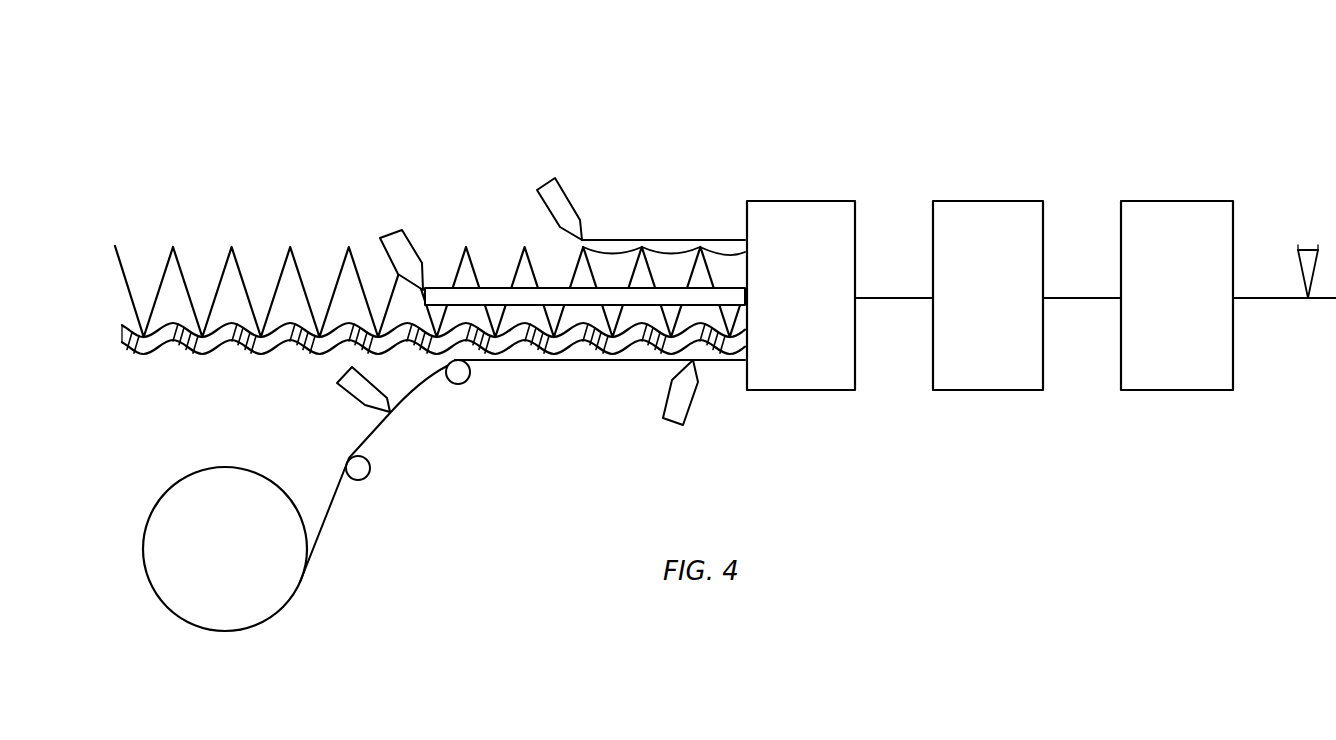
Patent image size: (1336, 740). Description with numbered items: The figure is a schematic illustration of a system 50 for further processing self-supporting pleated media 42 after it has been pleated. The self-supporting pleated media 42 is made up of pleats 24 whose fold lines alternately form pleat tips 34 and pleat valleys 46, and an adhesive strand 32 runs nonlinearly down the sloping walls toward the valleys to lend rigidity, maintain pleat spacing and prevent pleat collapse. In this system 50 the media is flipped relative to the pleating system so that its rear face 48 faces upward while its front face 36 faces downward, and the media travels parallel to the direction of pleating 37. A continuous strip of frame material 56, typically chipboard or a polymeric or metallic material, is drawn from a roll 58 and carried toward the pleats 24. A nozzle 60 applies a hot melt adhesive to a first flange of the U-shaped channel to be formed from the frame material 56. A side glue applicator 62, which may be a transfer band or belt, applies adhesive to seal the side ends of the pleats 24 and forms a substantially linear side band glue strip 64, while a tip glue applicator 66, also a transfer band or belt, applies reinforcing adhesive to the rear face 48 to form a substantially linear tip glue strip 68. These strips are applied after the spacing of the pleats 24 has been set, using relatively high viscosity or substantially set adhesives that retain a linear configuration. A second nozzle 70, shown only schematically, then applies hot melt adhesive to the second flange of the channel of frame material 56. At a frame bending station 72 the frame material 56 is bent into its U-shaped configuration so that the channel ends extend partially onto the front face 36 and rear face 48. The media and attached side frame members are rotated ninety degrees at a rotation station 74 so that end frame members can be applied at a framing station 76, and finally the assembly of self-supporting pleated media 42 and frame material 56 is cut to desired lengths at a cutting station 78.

The pleat 24 is at (271, 263).
The adhesive strand 32 is at (125, 338).
The pleat tip 34 is at (137, 333).
The front face 36 is at (178, 374).
The direction of pleating 37 is at (360, 106).
The self-supporting pleated media 42 is at (200, 148).
The pleat valley 46 is at (234, 248).
The rear face 48 is at (293, 195).
The system 50 is at (902, 72).
The frame material 56 is at (330, 510).
The roll 58 is at (268, 620).
The nozzle 60 is at (350, 390).
The side glue applicator 62 is at (394, 238).
The side band glue strip 64 is at (440, 288).
The tip glue applicator 66 is at (549, 188).
The tip glue strip 68 is at (672, 250).
The nozzle 70 is at (682, 403).
The frame bending station 72 is at (800, 201).
The rotation station 74 is at (990, 201).
The framing station 76 is at (1178, 201).
The cutting station 78 is at (1307, 248).